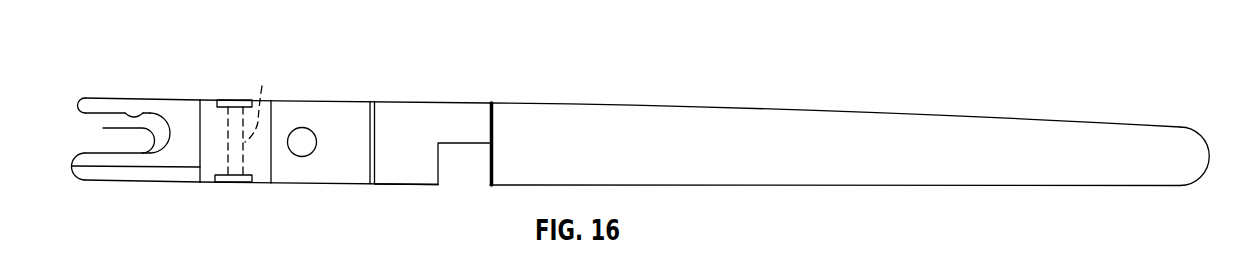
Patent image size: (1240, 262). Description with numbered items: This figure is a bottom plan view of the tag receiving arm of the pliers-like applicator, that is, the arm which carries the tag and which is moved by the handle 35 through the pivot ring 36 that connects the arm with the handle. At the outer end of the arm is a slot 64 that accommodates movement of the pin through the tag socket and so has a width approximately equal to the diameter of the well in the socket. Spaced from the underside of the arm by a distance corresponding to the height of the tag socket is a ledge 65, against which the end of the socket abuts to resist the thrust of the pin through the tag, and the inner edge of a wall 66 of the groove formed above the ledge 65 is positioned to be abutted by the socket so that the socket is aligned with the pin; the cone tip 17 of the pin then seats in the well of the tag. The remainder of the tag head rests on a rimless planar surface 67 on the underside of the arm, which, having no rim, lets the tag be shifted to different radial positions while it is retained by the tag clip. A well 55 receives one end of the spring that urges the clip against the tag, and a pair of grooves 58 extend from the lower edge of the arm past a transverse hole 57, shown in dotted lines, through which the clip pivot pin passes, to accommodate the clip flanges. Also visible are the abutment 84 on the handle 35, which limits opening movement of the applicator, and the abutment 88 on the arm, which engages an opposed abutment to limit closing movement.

The cone tip 17 is at (466, 98).
The handle 35 is at (818, 186).
The pivot ring 36 is at (400, 101).
The well 55 is at (303, 127).
The transverse hole 57 is at (269, 103).
The grooves 58 is at (237, 100).
The slot 64 is at (103, 128).
The ledge 65 is at (78, 113).
The wall 66 is at (142, 113).
The planar surface 67 is at (183, 115).
The abutment 84 is at (495, 127).
The abutment 88 is at (378, 162).